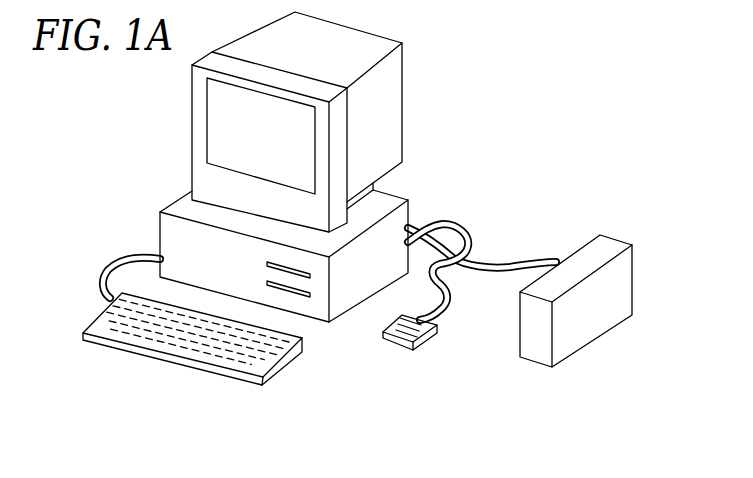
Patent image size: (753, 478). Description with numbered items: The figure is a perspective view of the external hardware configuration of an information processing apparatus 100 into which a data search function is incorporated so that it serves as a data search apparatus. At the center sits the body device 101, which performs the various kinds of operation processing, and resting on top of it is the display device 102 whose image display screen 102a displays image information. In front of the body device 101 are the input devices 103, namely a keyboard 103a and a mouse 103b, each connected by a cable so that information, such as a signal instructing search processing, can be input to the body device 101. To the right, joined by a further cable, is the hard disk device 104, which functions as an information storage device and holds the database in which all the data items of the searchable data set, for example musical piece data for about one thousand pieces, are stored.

The information processing apparatus 100 is at (494, 382).
The body device 101 is at (172, 237).
The display device 102 is at (200, 98).
The image display screen 102a is at (227, 130).
The input devices 103 is at (447, 398).
The keyboard 103a is at (282, 368).
The mouse 103b is at (404, 349).
The hard disk device 104 is at (595, 325).